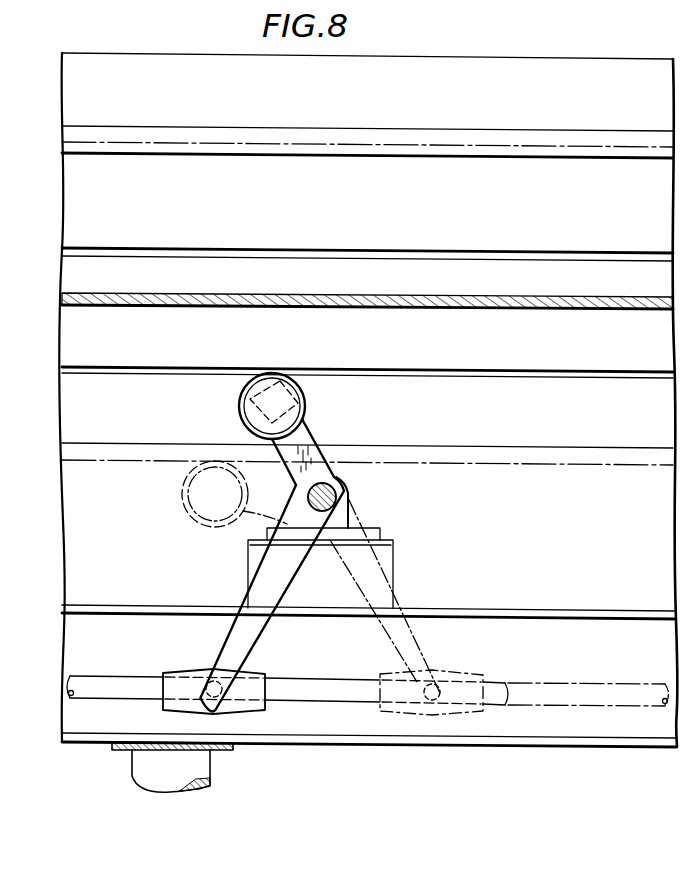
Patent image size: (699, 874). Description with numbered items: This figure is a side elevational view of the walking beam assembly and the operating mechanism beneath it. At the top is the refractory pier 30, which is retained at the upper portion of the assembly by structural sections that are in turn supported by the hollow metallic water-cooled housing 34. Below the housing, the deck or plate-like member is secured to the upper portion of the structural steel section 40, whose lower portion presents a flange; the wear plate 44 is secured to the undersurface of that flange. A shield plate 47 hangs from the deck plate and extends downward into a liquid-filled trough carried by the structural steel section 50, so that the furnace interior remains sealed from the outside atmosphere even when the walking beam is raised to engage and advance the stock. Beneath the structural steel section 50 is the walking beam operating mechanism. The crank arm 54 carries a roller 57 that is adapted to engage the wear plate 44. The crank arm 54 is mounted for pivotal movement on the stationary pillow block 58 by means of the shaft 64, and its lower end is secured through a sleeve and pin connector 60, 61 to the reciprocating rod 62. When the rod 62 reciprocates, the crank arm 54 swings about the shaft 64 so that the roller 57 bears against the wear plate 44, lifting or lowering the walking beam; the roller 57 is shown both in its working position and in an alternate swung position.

The refractory pier 30 is at (221, 90).
The water-cooled housing 34 is at (209, 229).
The structural steel section 40 is at (151, 349).
The wear plate 44 is at (62, 372).
The shield plate 47 is at (282, 310).
The structural steel section 50 is at (527, 663).
The crank arm 54 is at (265, 578).
The roller 57 is at (250, 412).
The pillow block 58 is at (392, 562).
The sleeve and pin connector 60 is at (182, 672).
The sleeve and pin connector 61 is at (226, 706).
The reciprocating rod 62 is at (95, 677).
The shaft 64 is at (348, 494).